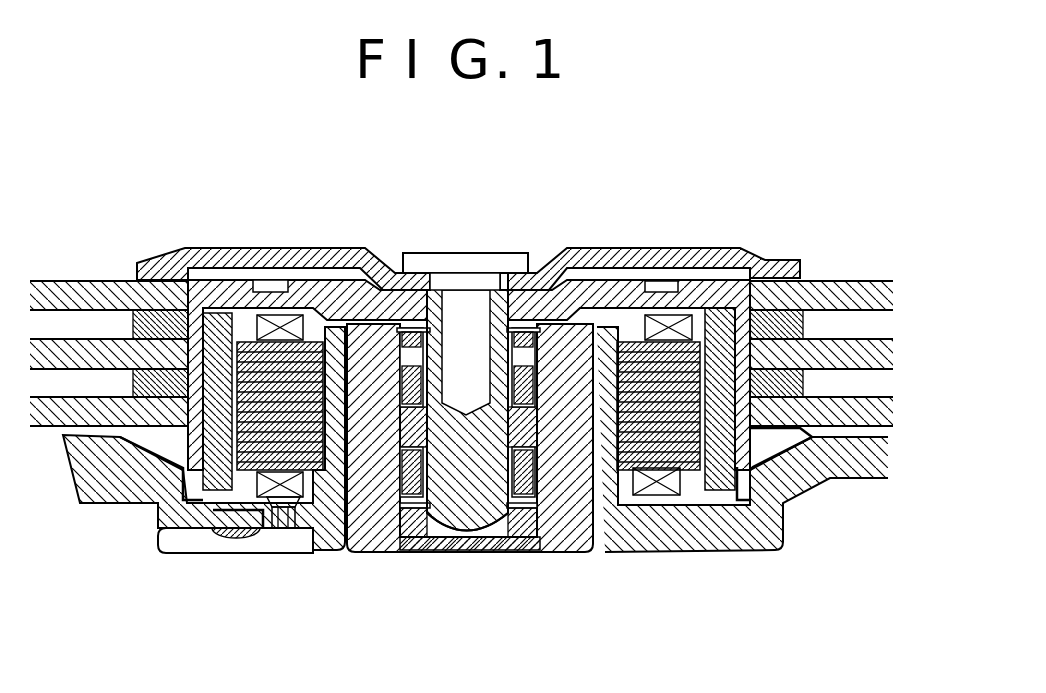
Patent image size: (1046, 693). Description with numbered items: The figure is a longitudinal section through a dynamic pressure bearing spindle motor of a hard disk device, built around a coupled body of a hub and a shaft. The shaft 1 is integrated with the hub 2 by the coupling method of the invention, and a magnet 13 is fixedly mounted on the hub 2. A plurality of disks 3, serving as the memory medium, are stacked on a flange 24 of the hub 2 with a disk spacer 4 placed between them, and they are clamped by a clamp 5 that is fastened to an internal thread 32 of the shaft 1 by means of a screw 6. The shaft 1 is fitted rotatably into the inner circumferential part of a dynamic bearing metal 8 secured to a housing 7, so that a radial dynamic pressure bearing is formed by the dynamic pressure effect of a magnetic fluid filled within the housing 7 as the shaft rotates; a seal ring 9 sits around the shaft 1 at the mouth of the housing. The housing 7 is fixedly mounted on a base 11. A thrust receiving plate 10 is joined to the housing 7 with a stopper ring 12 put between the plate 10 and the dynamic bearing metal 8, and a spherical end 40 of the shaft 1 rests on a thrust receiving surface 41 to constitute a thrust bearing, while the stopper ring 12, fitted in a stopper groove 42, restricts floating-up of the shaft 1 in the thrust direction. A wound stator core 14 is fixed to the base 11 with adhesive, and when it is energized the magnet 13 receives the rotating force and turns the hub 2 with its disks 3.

The shaft 1 is at (503, 553).
The hub 2 is at (335, 280).
The disks 3 is at (850, 403).
The disk spacer 4 is at (780, 377).
The clamp 5 is at (220, 258).
The screw 6 is at (422, 262).
The housing 7 is at (570, 553).
The dynamic bearing metal 8 is at (388, 420).
The seal ring 9 is at (522, 327).
The thrust receiving plate 10 is at (432, 553).
The base 11 is at (757, 538).
The stopper ring 12 is at (408, 553).
The magnet 13 is at (718, 313).
The wound stator core 14 is at (665, 468).
The flange 24 is at (800, 473).
The internal thread 32 is at (460, 313).
The spherical end 40 is at (458, 553).
The thrust receiving surface 41 is at (483, 553).
The stopper groove 42 is at (527, 553).